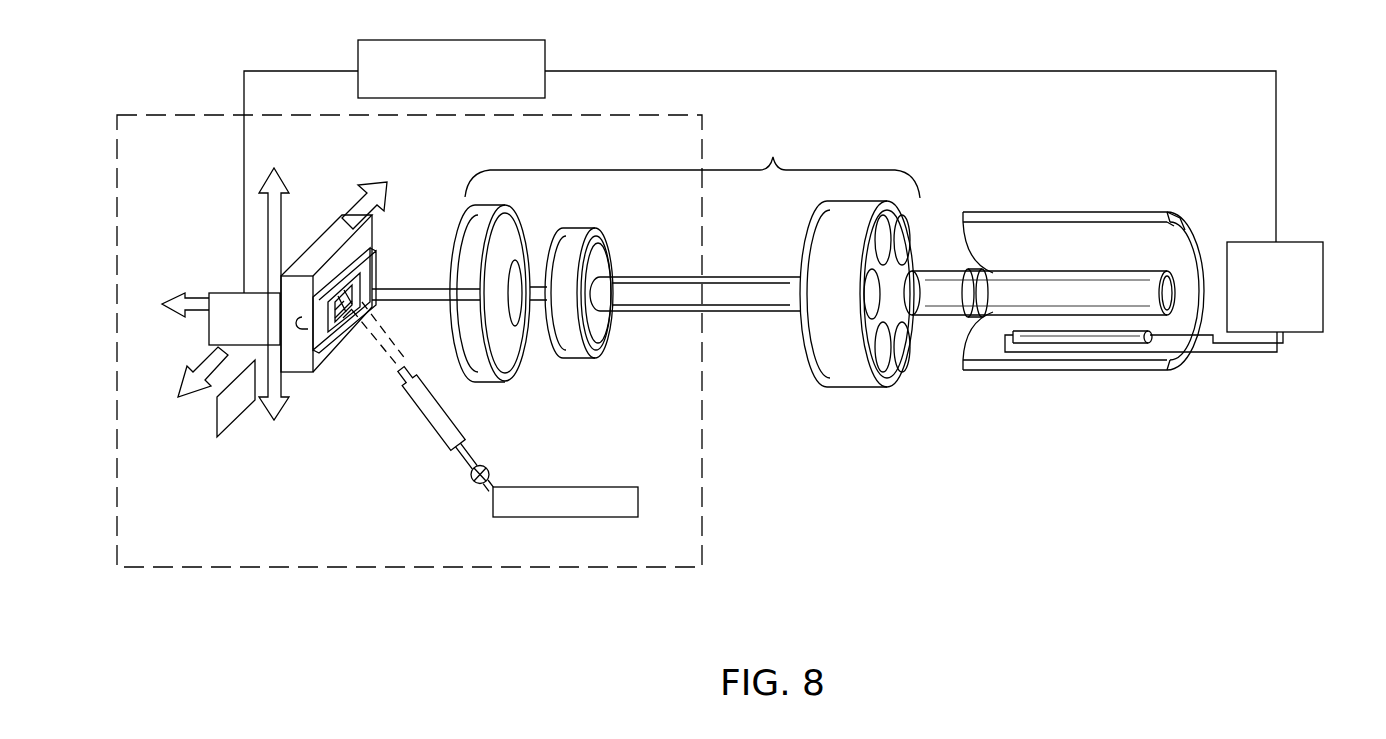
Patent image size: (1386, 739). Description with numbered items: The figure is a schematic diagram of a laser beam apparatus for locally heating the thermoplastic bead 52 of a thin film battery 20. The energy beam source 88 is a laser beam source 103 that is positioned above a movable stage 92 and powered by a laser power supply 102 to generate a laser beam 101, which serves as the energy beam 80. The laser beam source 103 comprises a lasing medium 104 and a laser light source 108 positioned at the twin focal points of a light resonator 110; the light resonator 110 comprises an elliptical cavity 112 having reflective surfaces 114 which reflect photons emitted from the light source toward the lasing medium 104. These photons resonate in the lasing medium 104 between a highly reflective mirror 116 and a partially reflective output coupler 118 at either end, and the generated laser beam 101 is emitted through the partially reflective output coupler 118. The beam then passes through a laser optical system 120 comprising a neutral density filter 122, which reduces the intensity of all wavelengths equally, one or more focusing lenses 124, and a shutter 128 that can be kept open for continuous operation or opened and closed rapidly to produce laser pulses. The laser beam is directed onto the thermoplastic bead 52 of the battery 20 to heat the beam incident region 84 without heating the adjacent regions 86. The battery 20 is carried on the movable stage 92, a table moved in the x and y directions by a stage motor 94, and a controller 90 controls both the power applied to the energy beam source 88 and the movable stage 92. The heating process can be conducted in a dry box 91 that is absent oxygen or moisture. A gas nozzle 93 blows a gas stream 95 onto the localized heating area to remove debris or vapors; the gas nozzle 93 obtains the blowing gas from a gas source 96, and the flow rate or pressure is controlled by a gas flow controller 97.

The thin film battery 20 is at (357, 263).
The thermoplastic bead 52 is at (356, 286).
The energy beam 80 is at (630, 272).
The beam incident region 84 is at (330, 283).
The adjacent regions 86 is at (337, 355).
The energy beam source 88 is at (1308, 112).
The controller 90 is at (451, 40).
The dry box 91 is at (702, 447).
The movable stage 92 is at (325, 358).
The gas nozzle 93 is at (438, 445).
The stage motor 94 is at (230, 293).
The gas stream 95 is at (400, 361).
The gas source 96 is at (598, 487).
The gas flow controller 97 is at (490, 471).
The laser beam 101 is at (410, 297).
The laser power supply 102 is at (1302, 242).
The laser beam source 103 is at (980, 160).
The lasing medium 104 is at (1043, 271).
The laser light source 108 is at (1027, 320).
The light resonator 110 is at (1177, 362).
The elliptical cavity 112 is at (1082, 355).
The reflective surfaces 114 is at (1147, 228).
The highly reflective mirror 116 is at (1160, 293).
The partially reflective output coupler 118 is at (980, 290).
The laser optical system 120 is at (692, 161).
The neutral density filter 122 is at (857, 380).
The focusing lens 124 is at (579, 359).
The shutter 128 is at (514, 368).